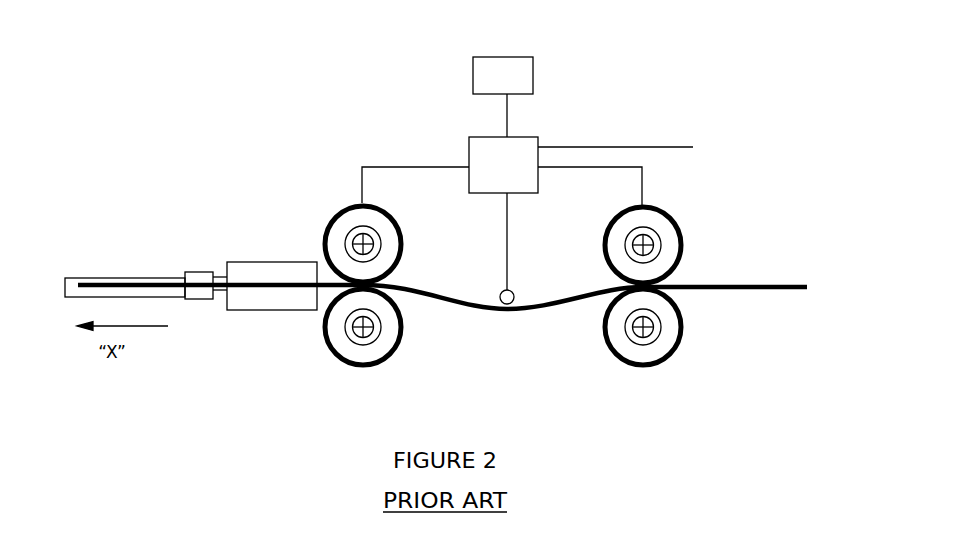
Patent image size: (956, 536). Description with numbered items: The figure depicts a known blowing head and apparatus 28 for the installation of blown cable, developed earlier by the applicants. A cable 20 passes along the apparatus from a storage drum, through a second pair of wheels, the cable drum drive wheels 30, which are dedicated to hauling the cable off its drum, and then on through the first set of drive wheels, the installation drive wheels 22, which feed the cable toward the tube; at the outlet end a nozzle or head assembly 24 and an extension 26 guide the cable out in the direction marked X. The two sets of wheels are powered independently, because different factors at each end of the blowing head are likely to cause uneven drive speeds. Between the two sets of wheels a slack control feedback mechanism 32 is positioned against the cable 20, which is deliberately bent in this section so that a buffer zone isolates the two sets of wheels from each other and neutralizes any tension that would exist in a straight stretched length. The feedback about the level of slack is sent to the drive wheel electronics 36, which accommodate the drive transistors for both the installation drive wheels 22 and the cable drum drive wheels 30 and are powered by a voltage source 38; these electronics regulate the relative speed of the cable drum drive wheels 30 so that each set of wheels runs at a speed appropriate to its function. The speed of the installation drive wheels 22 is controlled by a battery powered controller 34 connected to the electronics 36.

The web / sheet material 20 is at (422, 300).
The installation drive wheels 22 is at (353, 368).
The cutting block / die 24 is at (252, 310).
The cutter bar 26 is at (138, 278).
The blowing head and apparatus 28 is at (274, 150).
The cable drum drive wheels 30 is at (648, 368).
The slack control feedback mechanism 32 is at (506, 310).
The battery powered controller 34 is at (533, 72).
The drive wheel electronics 36 is at (469, 153).
The voltage source 38 is at (630, 147).